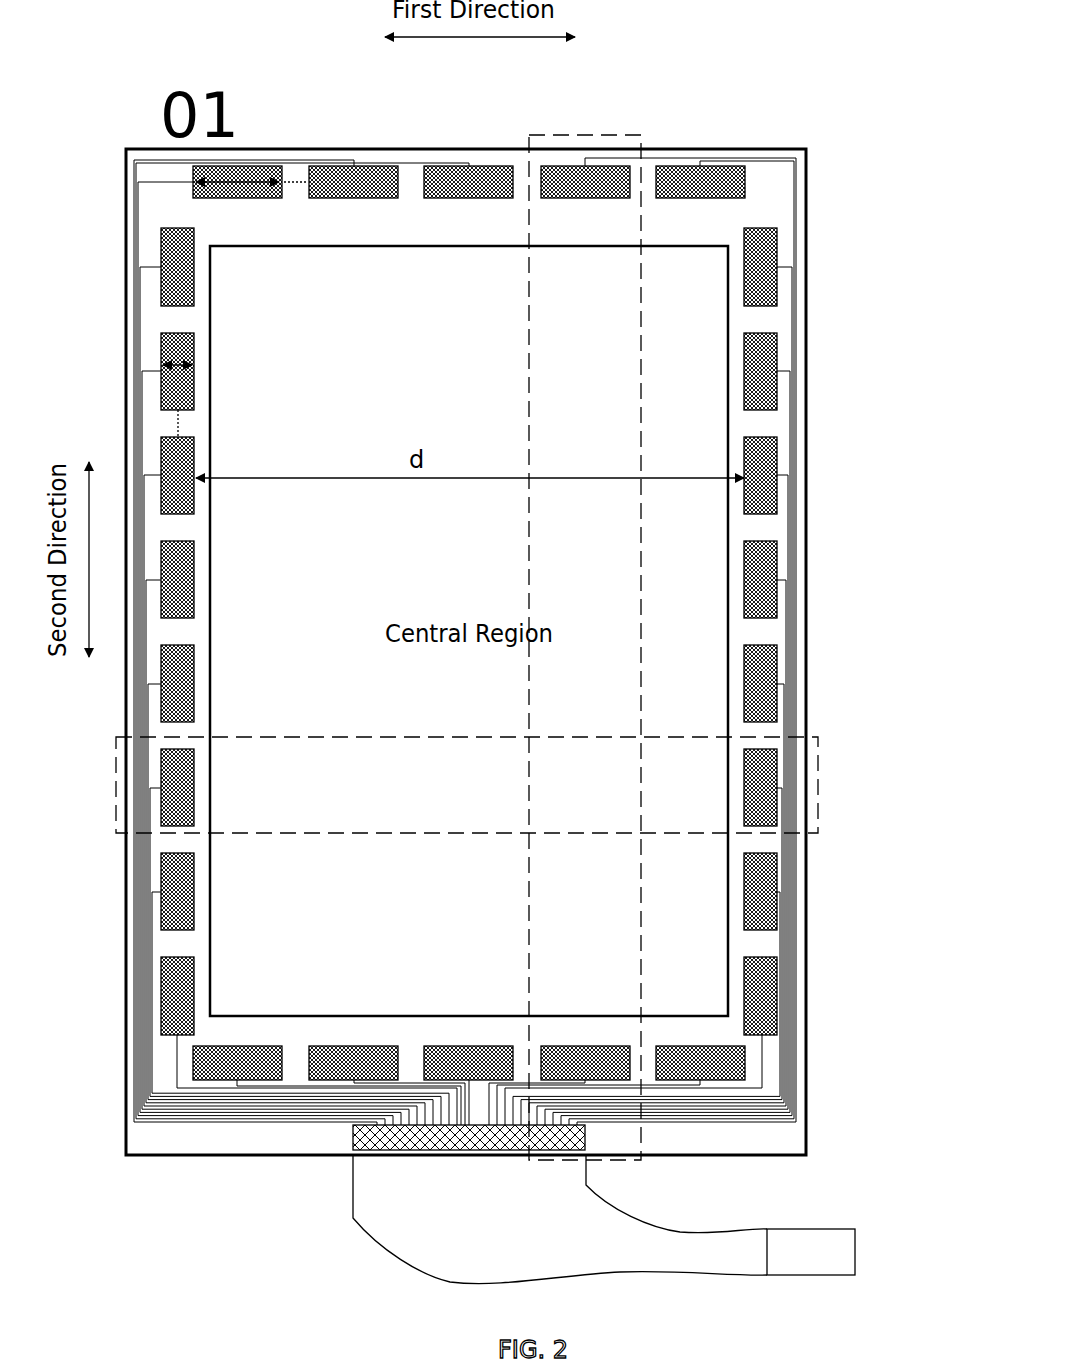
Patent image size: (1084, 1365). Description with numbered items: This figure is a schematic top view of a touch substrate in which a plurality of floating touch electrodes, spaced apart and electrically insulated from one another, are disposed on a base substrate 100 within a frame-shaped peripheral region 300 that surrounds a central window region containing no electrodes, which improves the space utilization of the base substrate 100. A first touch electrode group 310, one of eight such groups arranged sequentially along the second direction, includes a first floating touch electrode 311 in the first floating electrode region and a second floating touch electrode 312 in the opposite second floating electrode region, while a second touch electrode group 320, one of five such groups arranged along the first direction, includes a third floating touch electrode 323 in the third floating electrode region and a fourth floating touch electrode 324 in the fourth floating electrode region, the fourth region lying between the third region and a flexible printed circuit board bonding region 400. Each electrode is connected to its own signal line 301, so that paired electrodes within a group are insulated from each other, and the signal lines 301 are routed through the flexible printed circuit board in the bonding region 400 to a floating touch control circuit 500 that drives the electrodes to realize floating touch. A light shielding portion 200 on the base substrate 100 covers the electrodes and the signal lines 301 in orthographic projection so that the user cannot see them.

The base substrate 100 is at (715, 148).
The light shielding portion 200 is at (742, 215).
The peripheral region 300 is at (487, 618).
The signal line 301 is at (797, 1093).
The first touch electrode group 310 is at (487, 796).
The first floating touch electrode 311 is at (168, 765).
The second floating touch electrode 312 is at (768, 810).
The second touch electrode group 320 is at (693, 618).
The third floating touch electrode 323 is at (605, 178).
The fourth floating touch electrode 324 is at (582, 1058).
The flexible printed circuit board bonding region 400 is at (565, 1136).
The floating touch control circuit 500 is at (855, 1252).